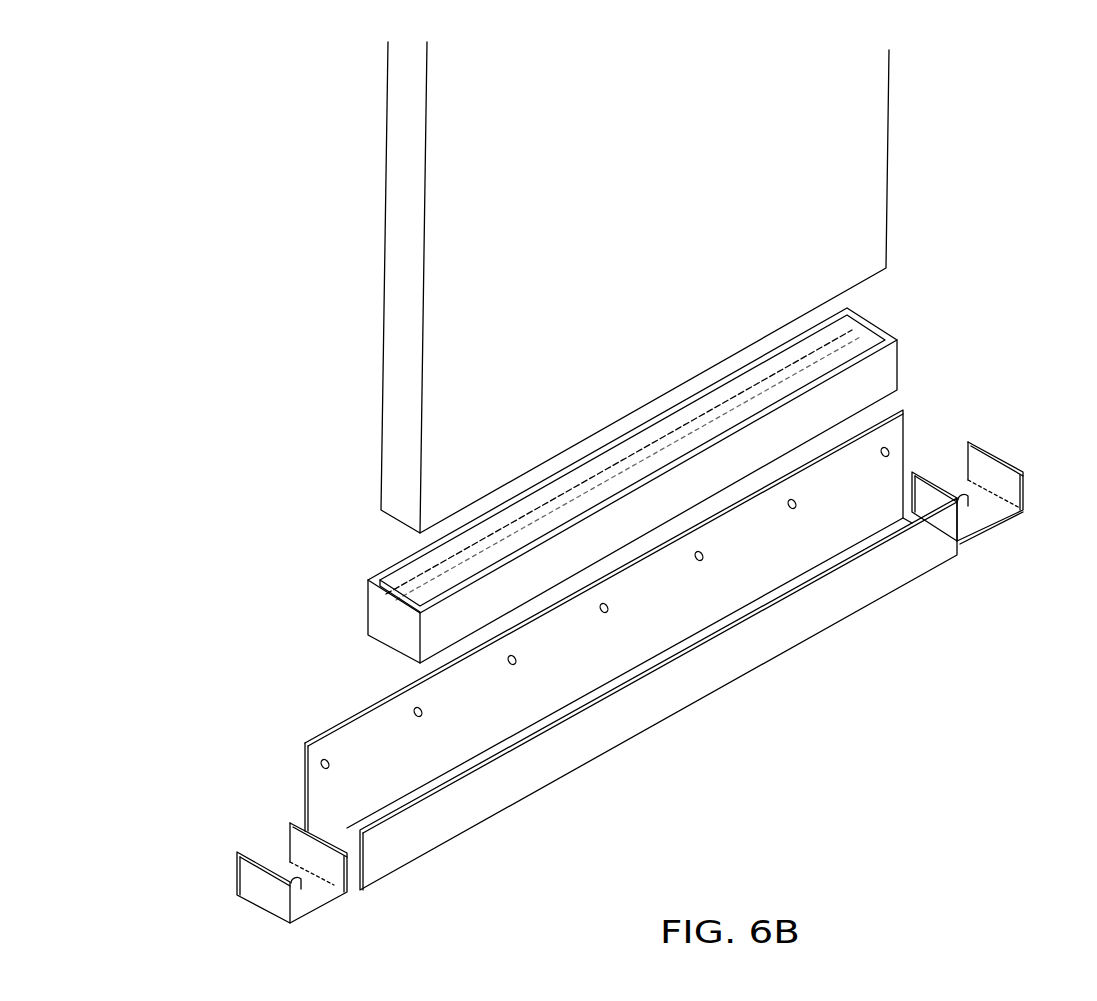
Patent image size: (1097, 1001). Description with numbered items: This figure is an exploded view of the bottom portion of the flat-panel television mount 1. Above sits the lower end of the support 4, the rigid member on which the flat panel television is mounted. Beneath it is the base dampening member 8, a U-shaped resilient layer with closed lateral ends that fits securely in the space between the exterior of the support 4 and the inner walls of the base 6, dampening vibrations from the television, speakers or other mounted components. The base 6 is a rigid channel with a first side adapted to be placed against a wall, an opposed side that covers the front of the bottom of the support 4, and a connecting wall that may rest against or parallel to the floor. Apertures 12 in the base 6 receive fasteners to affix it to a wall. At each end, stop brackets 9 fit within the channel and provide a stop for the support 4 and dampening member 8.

The flat-panel television mount 1 is at (172, 30).
The support 4 is at (889, 113).
The base 6 is at (631, 650).
The base dampening member 8 is at (897, 372).
The stop brackets 9 is at (232, 870).
The apertures 12 is at (795, 509).